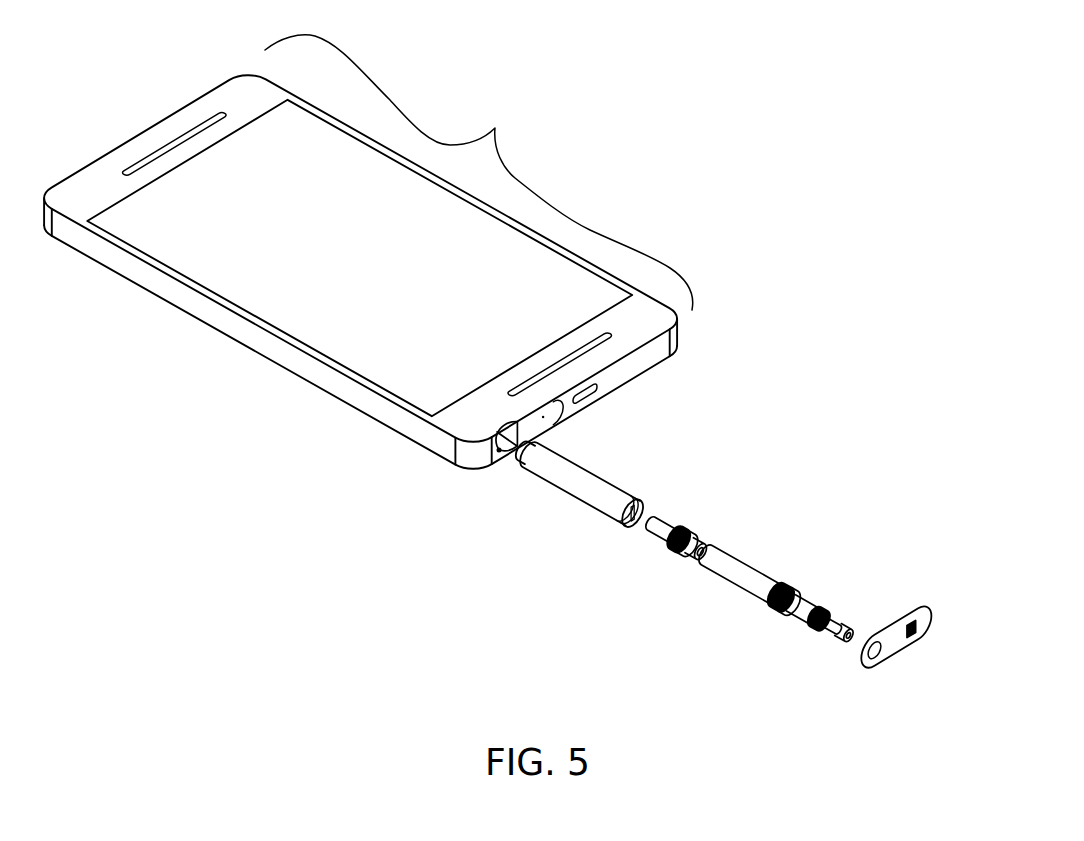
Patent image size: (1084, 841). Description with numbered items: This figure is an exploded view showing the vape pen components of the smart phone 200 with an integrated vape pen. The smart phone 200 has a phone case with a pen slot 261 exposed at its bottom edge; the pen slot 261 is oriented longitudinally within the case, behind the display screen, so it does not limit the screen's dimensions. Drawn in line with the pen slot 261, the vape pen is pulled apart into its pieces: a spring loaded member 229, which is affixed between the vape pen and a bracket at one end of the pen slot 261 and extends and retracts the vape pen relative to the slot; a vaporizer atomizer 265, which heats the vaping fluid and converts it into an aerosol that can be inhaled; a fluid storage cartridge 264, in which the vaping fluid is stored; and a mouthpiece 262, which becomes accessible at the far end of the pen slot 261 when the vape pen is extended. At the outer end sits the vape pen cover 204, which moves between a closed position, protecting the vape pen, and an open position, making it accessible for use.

The smart phone 200 is at (368, 252).
The pen slot 261 is at (502, 452).
The spring loaded member 229 is at (562, 488).
The vaporizer atomizer 265 is at (672, 522).
The fluid storage cartridge 264 is at (740, 560).
The mouthpiece 262 is at (842, 640).
The vape pen cover 204 is at (907, 652).